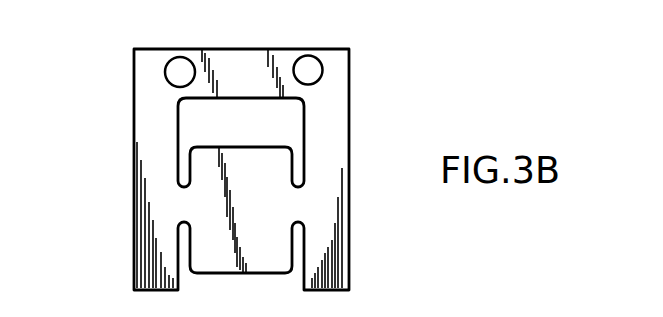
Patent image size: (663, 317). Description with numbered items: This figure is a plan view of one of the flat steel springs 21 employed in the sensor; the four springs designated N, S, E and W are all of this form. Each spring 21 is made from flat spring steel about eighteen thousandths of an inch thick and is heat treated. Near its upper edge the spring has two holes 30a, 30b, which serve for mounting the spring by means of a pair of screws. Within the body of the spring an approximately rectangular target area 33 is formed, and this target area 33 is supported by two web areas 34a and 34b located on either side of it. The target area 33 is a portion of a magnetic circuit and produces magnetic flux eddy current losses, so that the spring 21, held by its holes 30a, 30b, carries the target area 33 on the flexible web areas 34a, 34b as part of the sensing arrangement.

The flat steel spring 21 is at (350, 93).
The mounting hole 30a is at (177, 57).
The mounting hole 30b is at (307, 56).
The target area 33 is at (283, 146).
The web area 34a is at (182, 203).
The web area 34b is at (300, 196).